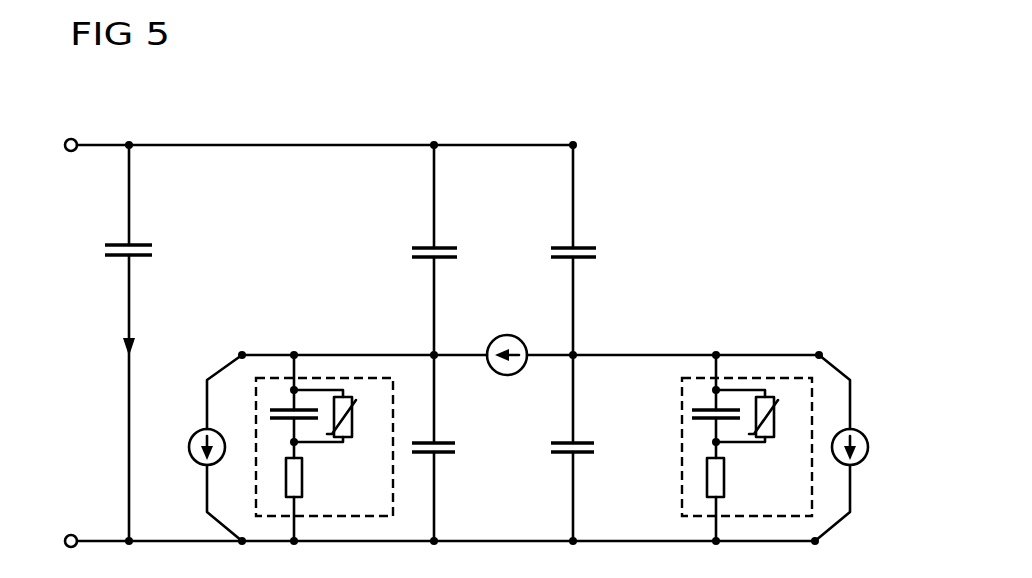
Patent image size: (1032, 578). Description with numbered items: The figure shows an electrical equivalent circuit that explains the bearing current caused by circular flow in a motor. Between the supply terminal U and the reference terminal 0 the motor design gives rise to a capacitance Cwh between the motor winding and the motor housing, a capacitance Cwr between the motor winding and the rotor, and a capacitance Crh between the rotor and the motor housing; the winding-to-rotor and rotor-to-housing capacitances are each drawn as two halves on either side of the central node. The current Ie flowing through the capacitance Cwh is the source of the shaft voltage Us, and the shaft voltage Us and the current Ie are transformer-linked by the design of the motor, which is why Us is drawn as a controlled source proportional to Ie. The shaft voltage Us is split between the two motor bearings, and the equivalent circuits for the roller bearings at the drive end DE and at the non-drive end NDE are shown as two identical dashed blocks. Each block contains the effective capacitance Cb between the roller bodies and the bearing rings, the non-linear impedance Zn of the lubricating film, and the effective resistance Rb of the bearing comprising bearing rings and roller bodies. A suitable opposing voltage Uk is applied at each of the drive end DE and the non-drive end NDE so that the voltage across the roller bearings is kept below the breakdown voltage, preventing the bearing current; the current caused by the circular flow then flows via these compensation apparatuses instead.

The supply voltage terminal U is at (313, 127).
The ground / zero potential terminal 0 is at (435, 521).
The capacitance between the motor winding and the motor housing Cwh is at (99, 343).
The current Ie is at (113, 346).
The capacitance between the motor winding and rotor Cwr is at (348, 245).
The capacitance between the rotor and the motor housing Crh is at (485, 447).
The shaft voltage Us is at (530, 339).
The drive end DE is at (238, 354).
The non-drive end NDE is at (822, 355).
The opposing voltage Uk is at (886, 500).
The effective capacitance between the roller bodies and the bearing rings Cb is at (707, 406).
The non-linear impedance of the lubricating film Zn is at (554, 416).
The effective resistance of the bearing Rb is at (523, 489).